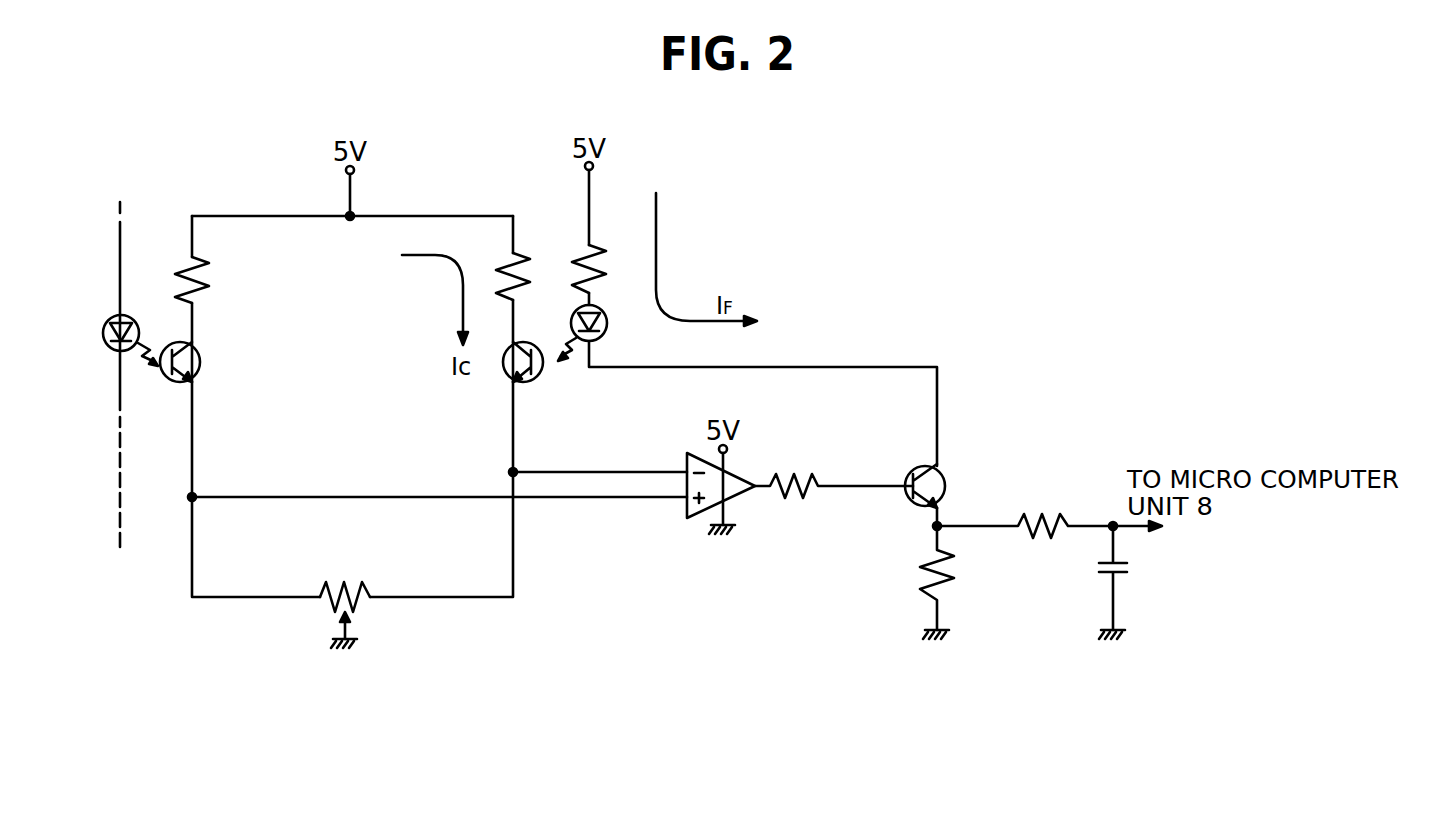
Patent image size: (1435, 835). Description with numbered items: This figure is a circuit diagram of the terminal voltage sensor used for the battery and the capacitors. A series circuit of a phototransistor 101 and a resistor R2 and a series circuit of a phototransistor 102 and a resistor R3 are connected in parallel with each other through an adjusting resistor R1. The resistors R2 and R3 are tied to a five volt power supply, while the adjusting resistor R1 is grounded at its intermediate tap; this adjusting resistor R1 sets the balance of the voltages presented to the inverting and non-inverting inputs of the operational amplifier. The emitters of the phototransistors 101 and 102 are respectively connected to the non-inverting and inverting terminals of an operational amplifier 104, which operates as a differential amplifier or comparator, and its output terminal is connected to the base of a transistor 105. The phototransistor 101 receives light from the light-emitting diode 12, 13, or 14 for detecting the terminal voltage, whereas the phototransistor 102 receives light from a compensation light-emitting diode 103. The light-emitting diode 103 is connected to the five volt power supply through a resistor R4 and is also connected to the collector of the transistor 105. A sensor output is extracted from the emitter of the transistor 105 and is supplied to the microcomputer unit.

The light-emitting diode 12 is at (103, 374).
The light-emitting diode 13 is at (103, 374).
The light-emitting diode 14 is at (72, 275).
The phototransistor 101 is at (203, 358).
The phototransistor 102 is at (535, 383).
The compensation light-emitting diode 103 is at (607, 328).
The operational amplifier 104 is at (692, 520).
The transistor 105 is at (947, 477).
The adjusting resistor R1 is at (345, 598).
The resistor R2 is at (214, 280).
The resistor R3 is at (503, 269).
The resistor R4 is at (609, 269).